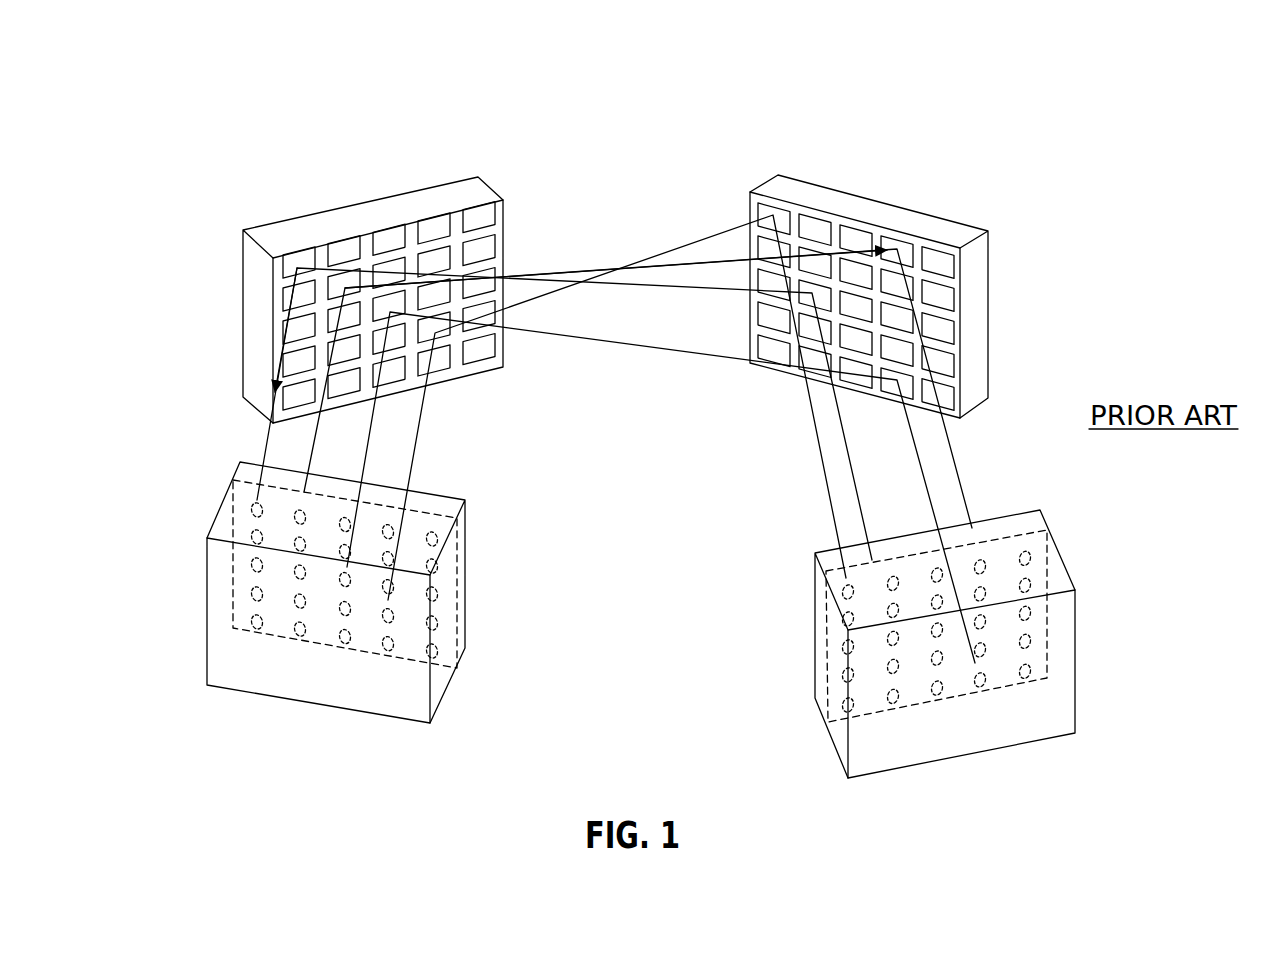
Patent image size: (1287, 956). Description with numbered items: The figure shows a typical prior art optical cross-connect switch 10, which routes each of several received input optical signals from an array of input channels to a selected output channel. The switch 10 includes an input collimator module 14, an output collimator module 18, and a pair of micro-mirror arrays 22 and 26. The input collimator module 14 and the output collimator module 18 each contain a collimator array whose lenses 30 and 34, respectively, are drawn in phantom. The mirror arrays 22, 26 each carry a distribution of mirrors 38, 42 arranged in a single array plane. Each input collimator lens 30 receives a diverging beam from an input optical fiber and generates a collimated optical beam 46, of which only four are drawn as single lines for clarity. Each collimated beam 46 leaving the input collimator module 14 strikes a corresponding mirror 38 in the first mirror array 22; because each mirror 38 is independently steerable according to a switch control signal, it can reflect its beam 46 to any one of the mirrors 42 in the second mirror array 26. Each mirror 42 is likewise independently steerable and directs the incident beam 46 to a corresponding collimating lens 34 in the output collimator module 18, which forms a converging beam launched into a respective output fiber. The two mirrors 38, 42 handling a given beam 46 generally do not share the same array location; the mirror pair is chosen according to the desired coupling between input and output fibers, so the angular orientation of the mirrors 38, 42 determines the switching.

The optical cross-connect switch 10 is at (1082, 125).
The input collimator module 14 is at (178, 620).
The output collimator module 18 is at (1110, 652).
The first micro-mirror array 22 is at (215, 273).
The second micro-mirror array 26 is at (1020, 300).
The input collimator lenses 30 is at (343, 627).
The output collimator lenses 34 is at (1023, 667).
The mirrors of first mirror array 38 is at (472, 227).
The mirrors of second mirror array 42 is at (917, 250).
The collimated optical beam 46 is at (305, 441).